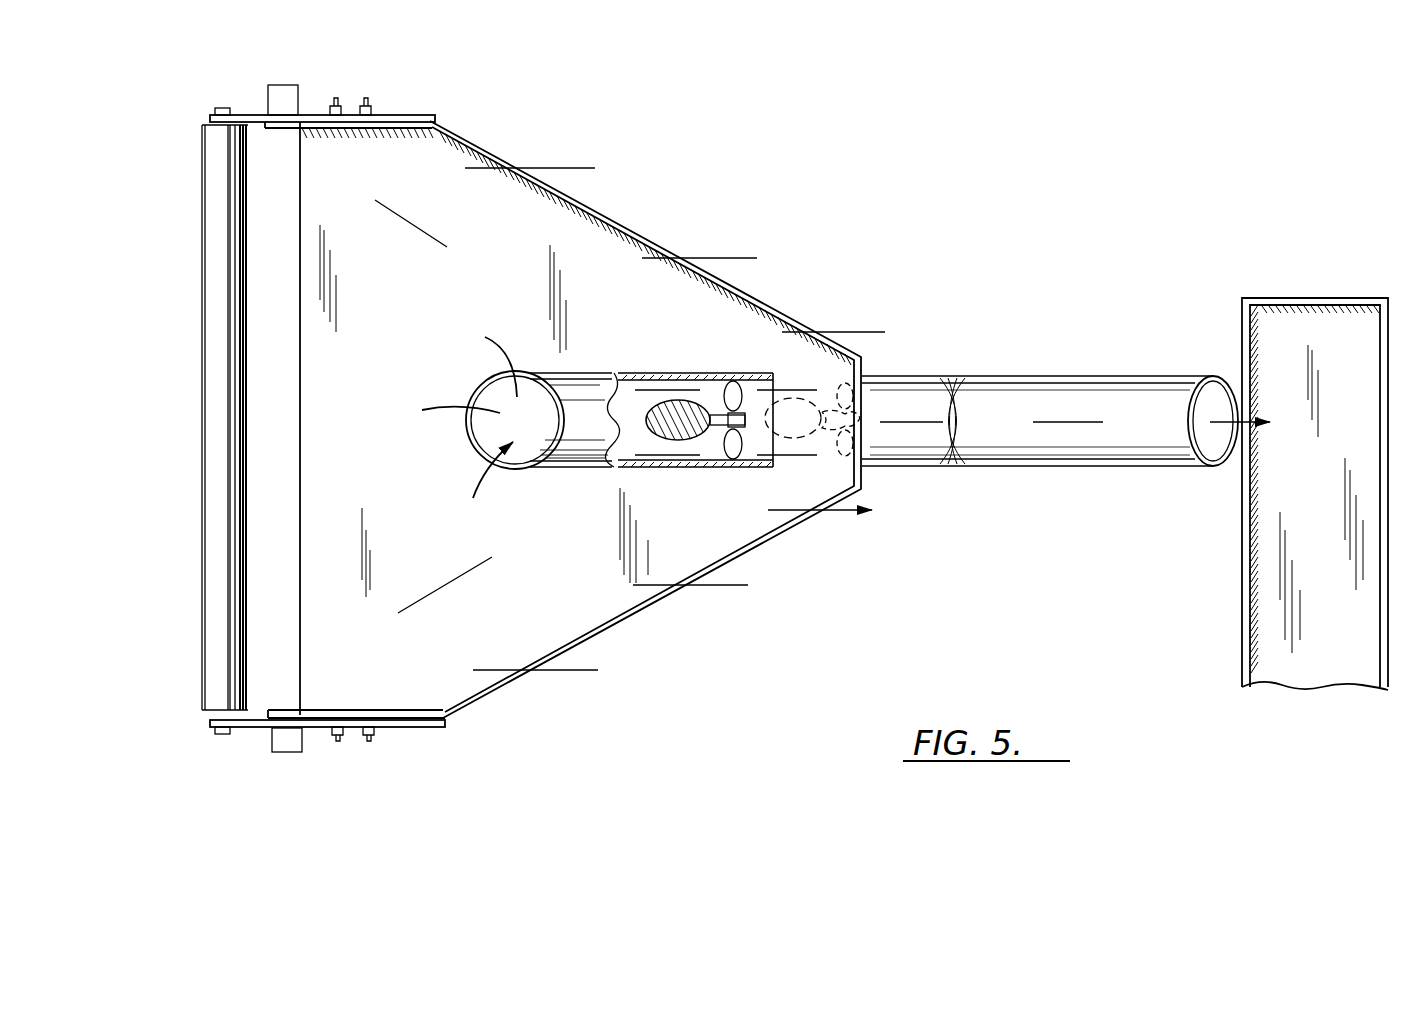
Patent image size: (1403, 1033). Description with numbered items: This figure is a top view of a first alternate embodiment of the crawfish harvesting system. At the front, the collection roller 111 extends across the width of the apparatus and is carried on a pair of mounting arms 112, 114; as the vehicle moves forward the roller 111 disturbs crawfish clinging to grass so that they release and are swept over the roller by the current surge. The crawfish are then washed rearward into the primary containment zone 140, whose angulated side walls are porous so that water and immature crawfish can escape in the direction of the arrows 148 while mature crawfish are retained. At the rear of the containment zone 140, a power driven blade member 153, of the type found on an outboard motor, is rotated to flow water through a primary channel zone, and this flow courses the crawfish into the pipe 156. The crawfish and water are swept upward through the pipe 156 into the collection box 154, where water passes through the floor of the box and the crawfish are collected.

The collection roller 111 is at (215, 296).
The mounting arm 112 is at (251, 113).
The mounting arm 114 is at (258, 724).
The primary containment zone 140 is at (418, 479).
The water flow arrows 148 is at (535, 168).
The power driven blade member 153 is at (678, 435).
The collection box 154 is at (1265, 330).
The pipe 156 is at (525, 434).